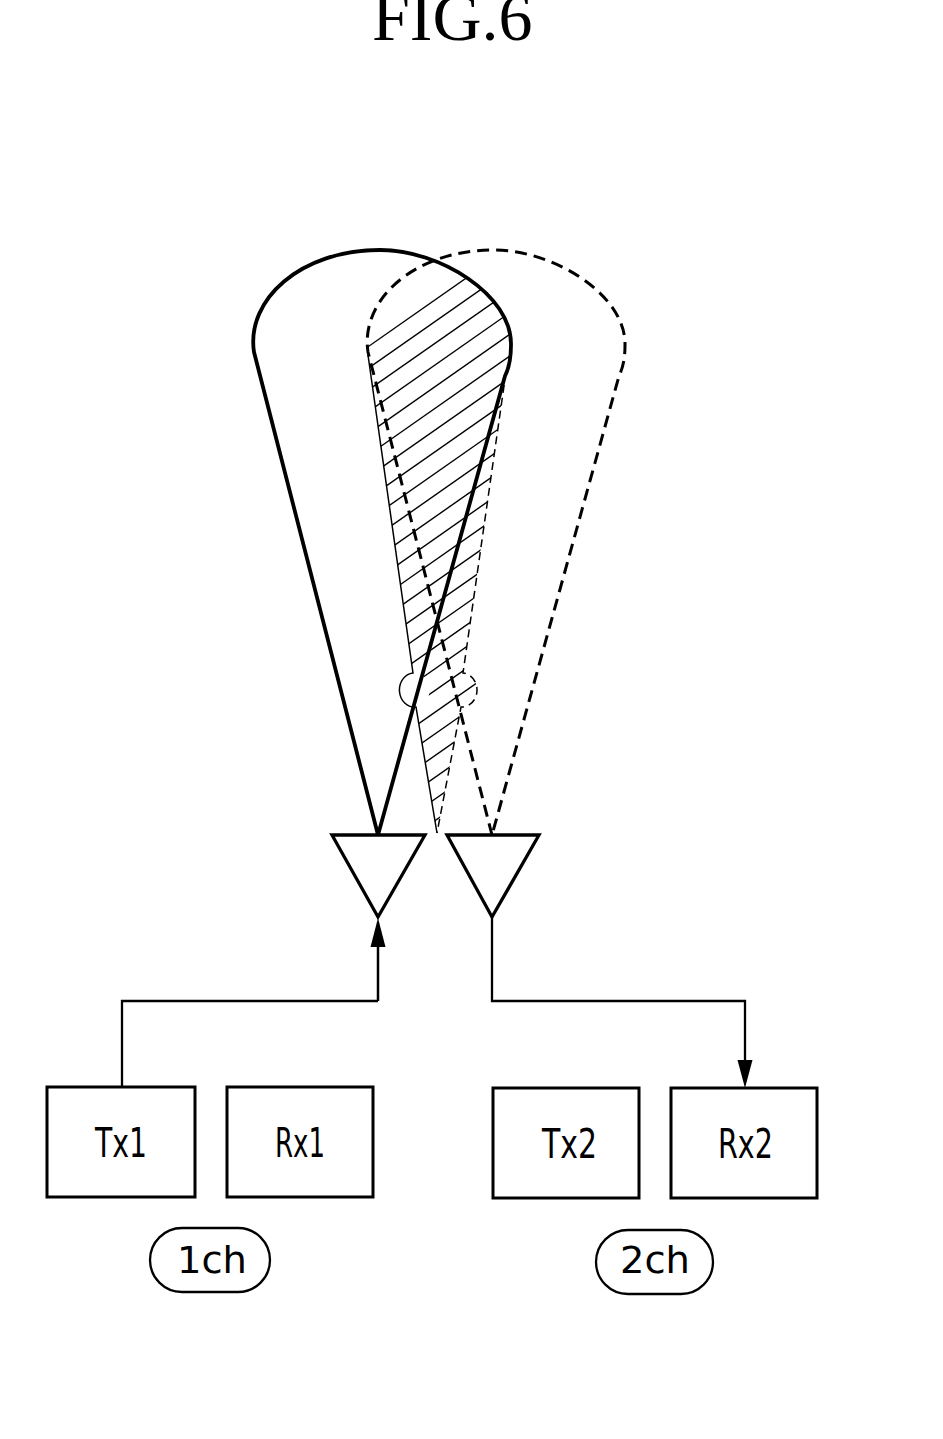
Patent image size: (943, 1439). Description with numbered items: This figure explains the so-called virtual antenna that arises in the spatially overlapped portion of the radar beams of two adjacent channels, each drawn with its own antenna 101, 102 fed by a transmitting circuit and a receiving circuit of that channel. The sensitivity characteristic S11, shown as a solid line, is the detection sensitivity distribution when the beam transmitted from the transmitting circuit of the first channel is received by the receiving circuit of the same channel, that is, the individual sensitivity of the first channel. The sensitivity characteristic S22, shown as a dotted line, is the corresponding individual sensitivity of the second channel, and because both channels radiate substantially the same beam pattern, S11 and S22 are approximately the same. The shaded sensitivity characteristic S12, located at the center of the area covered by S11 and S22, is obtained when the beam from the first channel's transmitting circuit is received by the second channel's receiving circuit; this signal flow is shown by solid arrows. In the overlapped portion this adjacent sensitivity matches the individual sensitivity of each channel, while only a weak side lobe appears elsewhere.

The sensitivity characteristic S11 is at (278, 325).
The sensitivity characteristic S12 is at (457, 277).
The sensitivity characteristic S22 is at (595, 318).
The first antenna 101 is at (353, 877).
The second antenna 102 is at (518, 882).